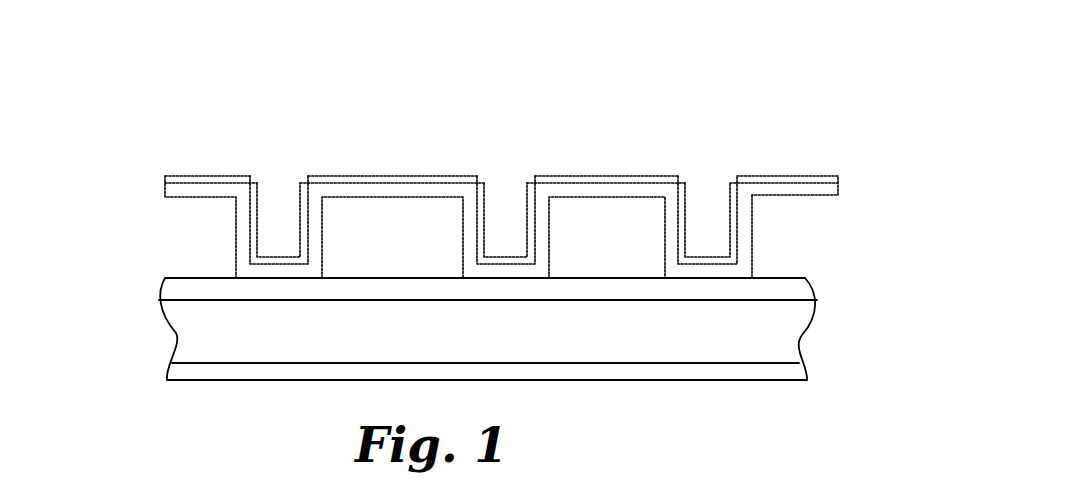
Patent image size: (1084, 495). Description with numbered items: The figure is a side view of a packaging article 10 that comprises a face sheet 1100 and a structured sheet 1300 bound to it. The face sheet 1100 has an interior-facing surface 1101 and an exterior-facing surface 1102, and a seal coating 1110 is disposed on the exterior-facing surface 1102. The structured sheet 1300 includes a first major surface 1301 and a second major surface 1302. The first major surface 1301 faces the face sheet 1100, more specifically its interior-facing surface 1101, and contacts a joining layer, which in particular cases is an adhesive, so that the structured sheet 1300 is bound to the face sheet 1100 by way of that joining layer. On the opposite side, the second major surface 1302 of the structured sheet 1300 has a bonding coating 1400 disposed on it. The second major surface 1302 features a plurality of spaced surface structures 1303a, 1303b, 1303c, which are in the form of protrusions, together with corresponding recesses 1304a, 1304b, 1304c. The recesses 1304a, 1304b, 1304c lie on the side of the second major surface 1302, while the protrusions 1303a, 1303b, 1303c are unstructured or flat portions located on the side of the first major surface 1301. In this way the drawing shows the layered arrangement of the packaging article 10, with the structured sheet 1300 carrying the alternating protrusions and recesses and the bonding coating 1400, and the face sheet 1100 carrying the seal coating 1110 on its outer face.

The packaging article 10 is at (780, 55).
The structured sheet 1300 is at (170, 191).
The first major surface 1301 is at (177, 200).
The second major surface 1302 is at (173, 179).
The surface structure 1303a is at (281, 262).
The surface structure 1303b is at (508, 262).
The surface structure 1303c is at (712, 262).
The recess 1304a is at (261, 165).
The recess 1304b is at (489, 165).
The recess 1304c is at (694, 165).
The bonding coating 1400 is at (804, 174).
The face sheet 1100 is at (180, 322).
The interior-facing surface 1101 is at (183, 296).
The exterior-facing surface 1102 is at (190, 365).
The seal coating 1110 is at (237, 368).